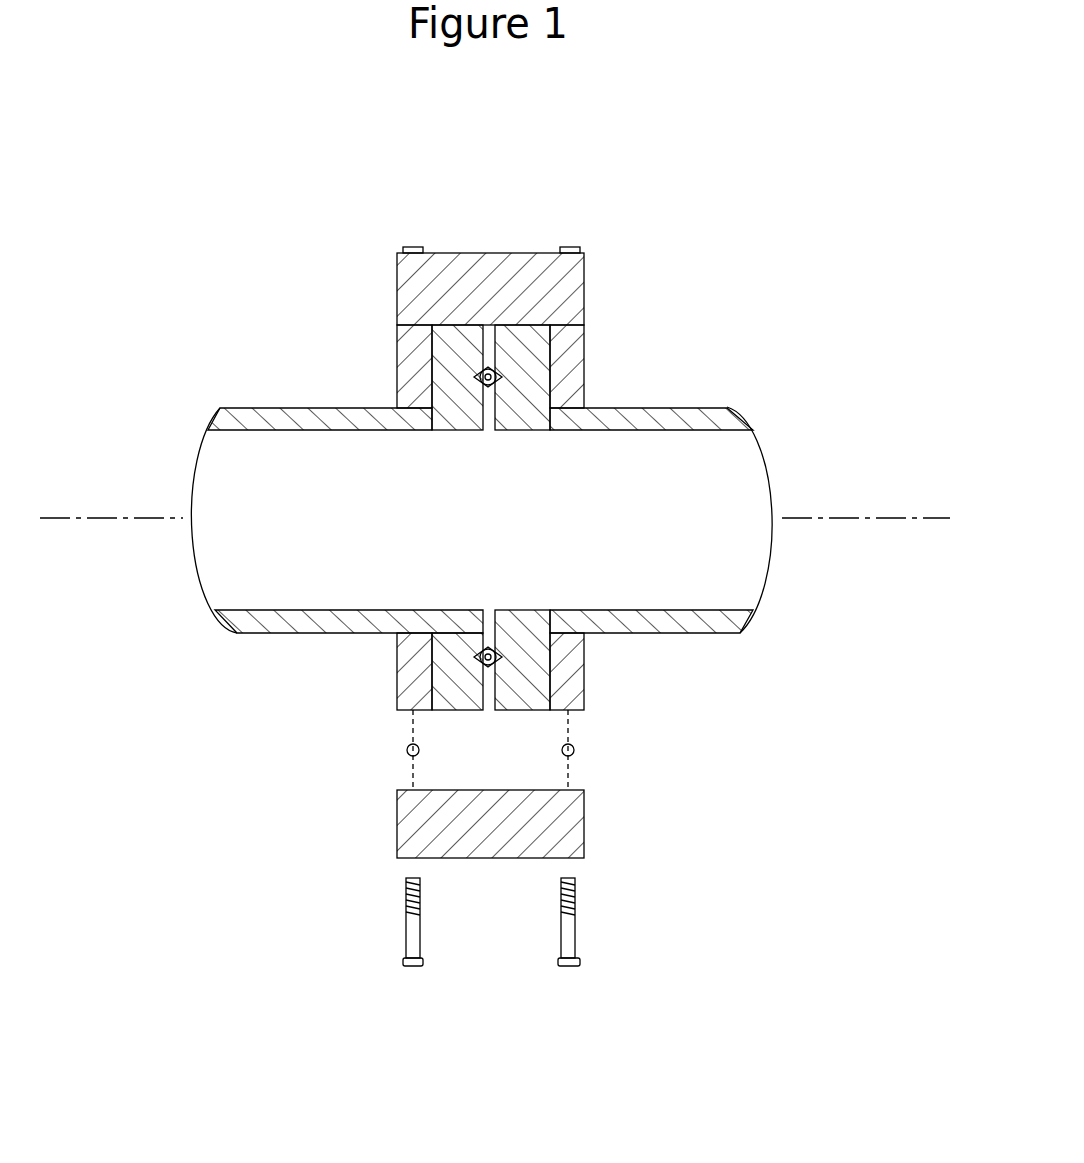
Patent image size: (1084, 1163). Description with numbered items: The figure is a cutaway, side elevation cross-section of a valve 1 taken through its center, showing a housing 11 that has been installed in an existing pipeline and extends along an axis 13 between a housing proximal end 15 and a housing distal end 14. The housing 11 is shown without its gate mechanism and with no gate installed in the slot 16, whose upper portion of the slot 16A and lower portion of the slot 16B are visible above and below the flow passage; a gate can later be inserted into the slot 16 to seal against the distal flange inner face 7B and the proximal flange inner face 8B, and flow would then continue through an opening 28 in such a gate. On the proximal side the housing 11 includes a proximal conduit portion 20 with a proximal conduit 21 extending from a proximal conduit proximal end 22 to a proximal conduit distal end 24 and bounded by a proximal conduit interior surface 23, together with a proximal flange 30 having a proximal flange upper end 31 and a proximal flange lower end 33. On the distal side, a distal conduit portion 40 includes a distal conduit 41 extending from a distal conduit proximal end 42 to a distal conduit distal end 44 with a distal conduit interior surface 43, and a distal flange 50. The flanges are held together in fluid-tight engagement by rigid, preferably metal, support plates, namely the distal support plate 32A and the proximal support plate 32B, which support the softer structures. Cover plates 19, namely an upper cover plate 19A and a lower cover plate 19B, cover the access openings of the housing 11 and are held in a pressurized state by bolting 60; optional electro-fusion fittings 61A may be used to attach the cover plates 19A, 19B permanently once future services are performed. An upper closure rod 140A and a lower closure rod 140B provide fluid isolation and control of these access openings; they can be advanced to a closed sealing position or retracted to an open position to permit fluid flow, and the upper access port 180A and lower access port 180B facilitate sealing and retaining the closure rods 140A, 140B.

The valve 1 is at (205, 218).
The cover plates 19 is at (535, 255).
The upper access port 180A is at (500, 377).
The upper cover plate 19A is at (585, 277).
The upper portion of the slot 16A is at (493, 337).
The proximal flange 30 is at (507, 348).
The housing 11 is at (585, 327).
The proximal flange upper end 31 is at (582, 357).
The upper closure rod 140A is at (565, 393).
The proximal conduit portion 20 is at (727, 407).
The opening 28 is at (735, 495).
The distal flange inner face 7B is at (433, 400).
The distal flange 50 is at (443, 403).
The distal conduit portion 40 is at (225, 407).
The axis 13 is at (65, 518).
The distal conduit distal end 44 is at (213, 433).
The proximal flange inner face 8B is at (483, 425).
The slot 16 is at (497, 420).
The proximal conduit interior surface 23 is at (669, 468).
The distal conduit interior surface 43 is at (292, 514).
The distal conduit 41 is at (312, 610).
The distal conduit proximal end 42 is at (480, 607).
The proximal conduit distal end 24 is at (505, 607).
The proximal conduit 21 is at (615, 610).
The proximal conduit proximal end 22 is at (742, 607).
The housing proximal end 15 is at (740, 633).
The housing distal end 14 is at (237, 633).
The lower access port 180B is at (395, 668).
The distal support plate 32A is at (395, 698).
The proximal support plate 32B is at (585, 660).
The proximal flange lower end 33 is at (582, 677).
The lower closure rod 140B is at (585, 697).
The lower portion of the slot 16B is at (490, 697).
The electro-fusion fittings 61A is at (408, 750).
The lower cover plate 19B is at (585, 838).
The bolting 60 is at (402, 957).